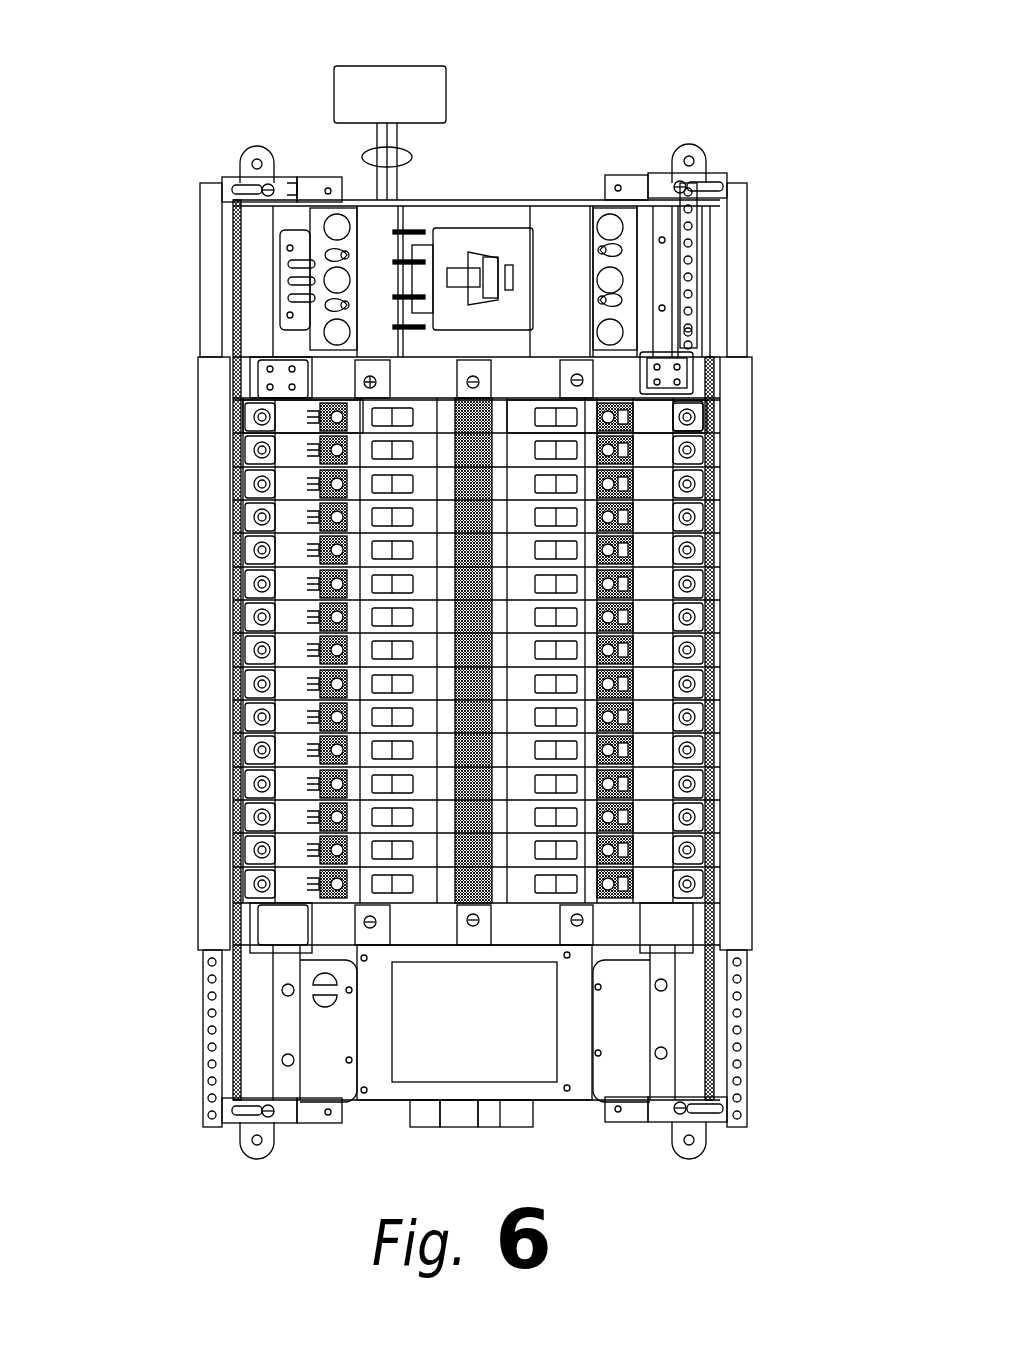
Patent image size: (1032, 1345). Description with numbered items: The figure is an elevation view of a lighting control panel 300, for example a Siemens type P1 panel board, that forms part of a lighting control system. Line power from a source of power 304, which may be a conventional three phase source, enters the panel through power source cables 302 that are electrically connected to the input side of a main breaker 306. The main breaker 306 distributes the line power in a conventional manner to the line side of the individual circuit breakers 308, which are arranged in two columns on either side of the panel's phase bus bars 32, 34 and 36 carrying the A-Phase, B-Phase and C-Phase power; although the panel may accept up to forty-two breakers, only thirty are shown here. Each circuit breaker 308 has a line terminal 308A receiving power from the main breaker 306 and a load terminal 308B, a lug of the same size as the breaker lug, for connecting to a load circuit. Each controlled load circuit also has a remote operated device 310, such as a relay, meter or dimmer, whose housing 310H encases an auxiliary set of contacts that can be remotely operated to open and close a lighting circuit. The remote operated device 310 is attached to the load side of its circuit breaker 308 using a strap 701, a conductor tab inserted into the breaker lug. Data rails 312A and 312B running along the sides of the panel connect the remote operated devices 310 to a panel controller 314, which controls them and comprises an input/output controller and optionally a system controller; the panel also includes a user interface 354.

The lighting control panel 300 is at (632, 102).
The power source cables 302 is at (412, 157).
The source of power 304 is at (446, 84).
The main breaker 306 is at (475, 238).
The individual circuit breakers 308 is at (590, 393).
The line terminal 308A is at (483, 425).
The load terminal 308B is at (610, 398).
The remote operated device 310 is at (672, 419).
The housing 310H is at (693, 440).
The data rail 312A is at (730, 818).
The data rail 312B is at (210, 840).
The A-Phase phase bus bar 32 is at (368, 922).
The B-Phase phase bus bar 34 is at (483, 933).
The C-Phase phase bus bar 36 is at (587, 932).
The user interface 354 is at (417, 1065).
The panel controller 314 is at (547, 1090).
The strap 701 is at (307, 469).